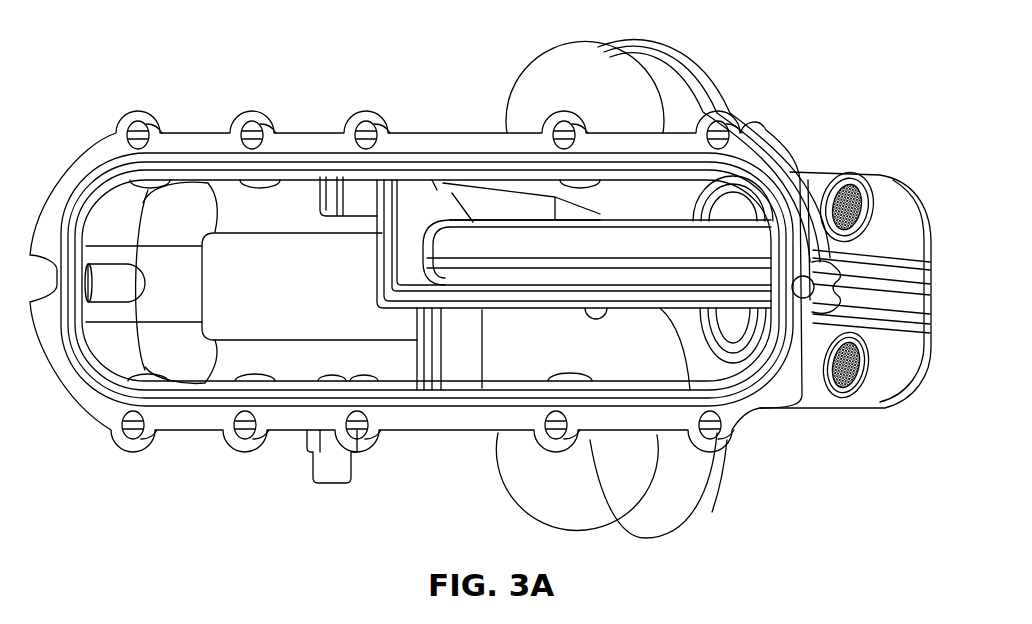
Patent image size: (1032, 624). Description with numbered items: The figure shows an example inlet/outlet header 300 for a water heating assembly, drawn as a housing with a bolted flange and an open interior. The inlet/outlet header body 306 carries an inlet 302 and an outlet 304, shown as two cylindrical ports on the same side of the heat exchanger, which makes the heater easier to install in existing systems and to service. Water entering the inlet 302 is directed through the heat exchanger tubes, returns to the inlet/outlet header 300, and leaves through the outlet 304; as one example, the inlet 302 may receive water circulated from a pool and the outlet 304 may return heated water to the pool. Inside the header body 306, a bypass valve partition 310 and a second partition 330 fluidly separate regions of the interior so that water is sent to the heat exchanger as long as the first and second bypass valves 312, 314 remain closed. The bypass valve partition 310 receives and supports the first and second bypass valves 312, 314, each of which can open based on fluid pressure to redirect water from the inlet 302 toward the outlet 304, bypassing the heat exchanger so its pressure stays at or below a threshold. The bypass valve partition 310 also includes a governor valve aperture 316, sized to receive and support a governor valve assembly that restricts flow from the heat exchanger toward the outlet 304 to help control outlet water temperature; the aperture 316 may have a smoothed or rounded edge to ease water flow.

The inlet/outlet header 300 is at (148, 54).
The inlet 302 is at (688, 67).
The outlet 304 is at (703, 512).
The inlet/outlet header body 306 is at (441, 133).
The bypass valve partition 310 is at (798, 173).
The first bypass valve 312 is at (583, 208).
The second bypass valve 314 is at (755, 173).
The governor valve aperture 316 is at (753, 344).
The second partition 330 is at (440, 352).